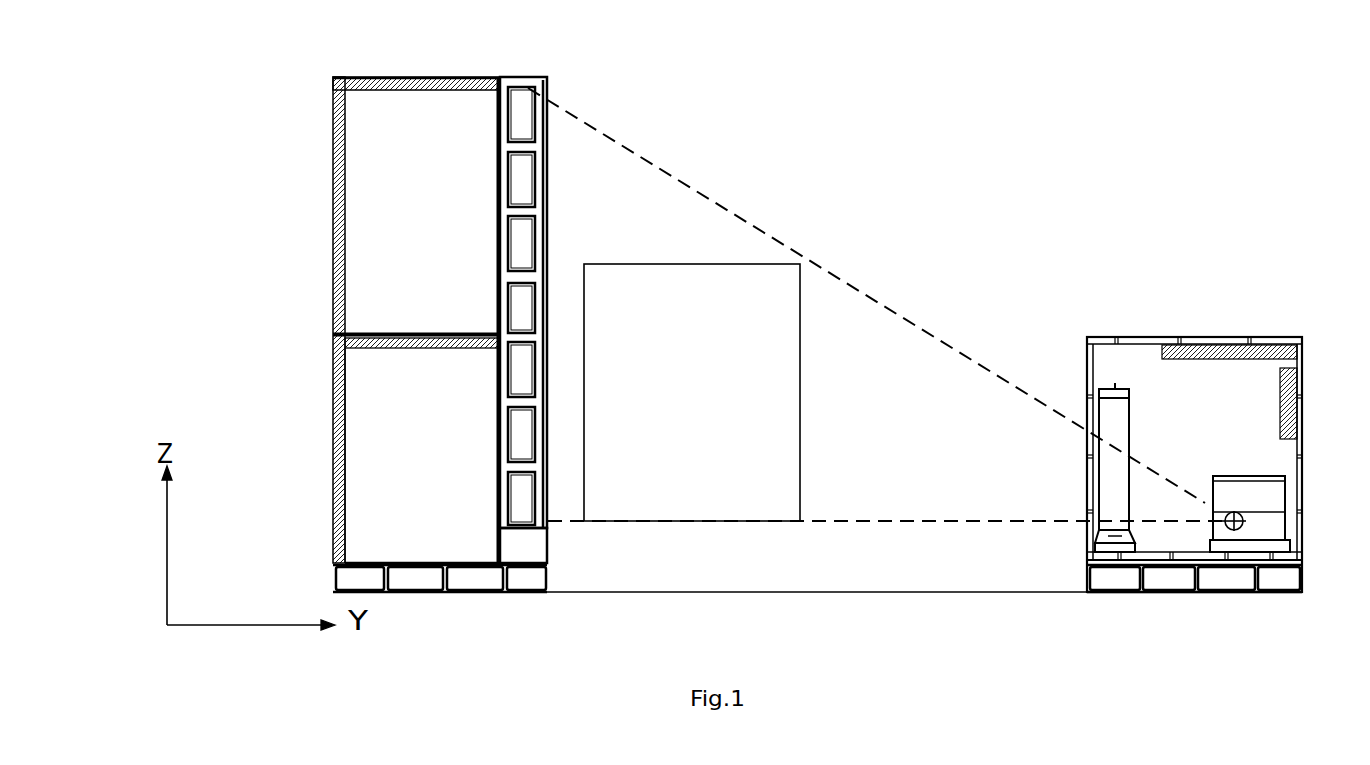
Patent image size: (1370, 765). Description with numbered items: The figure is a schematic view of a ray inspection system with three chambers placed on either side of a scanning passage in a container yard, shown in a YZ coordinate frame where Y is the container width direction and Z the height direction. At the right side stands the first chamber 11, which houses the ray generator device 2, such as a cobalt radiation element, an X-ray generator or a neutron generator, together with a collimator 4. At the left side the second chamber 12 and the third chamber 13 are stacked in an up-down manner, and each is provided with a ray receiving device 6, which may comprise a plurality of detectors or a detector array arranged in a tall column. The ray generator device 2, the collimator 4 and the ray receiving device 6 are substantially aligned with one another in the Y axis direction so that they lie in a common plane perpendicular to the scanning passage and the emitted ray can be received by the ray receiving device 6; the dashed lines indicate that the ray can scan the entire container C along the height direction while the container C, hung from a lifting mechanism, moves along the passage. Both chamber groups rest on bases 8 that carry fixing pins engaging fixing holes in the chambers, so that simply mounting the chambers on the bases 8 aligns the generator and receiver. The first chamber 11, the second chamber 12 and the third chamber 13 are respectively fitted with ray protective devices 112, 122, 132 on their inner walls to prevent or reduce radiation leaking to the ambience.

The second chamber 12 is at (316, 165).
The ray protective device 122 is at (378, 77).
The third chamber 13 is at (315, 420).
The ray protective device 132 is at (333, 465).
The ray receiving device 6 is at (525, 128).
The bases 8 is at (352, 580).
The first chamber 11 is at (1147, 338).
The ray protective device 112 is at (1282, 343).
The collimator 4 is at (1112, 420).
The ray generator device 2 is at (1273, 492).
The container C is at (738, 298).